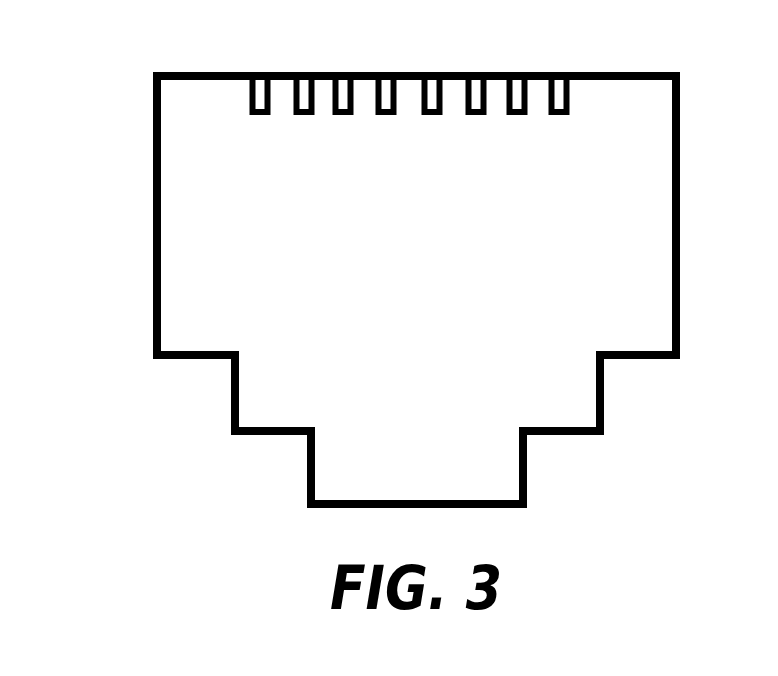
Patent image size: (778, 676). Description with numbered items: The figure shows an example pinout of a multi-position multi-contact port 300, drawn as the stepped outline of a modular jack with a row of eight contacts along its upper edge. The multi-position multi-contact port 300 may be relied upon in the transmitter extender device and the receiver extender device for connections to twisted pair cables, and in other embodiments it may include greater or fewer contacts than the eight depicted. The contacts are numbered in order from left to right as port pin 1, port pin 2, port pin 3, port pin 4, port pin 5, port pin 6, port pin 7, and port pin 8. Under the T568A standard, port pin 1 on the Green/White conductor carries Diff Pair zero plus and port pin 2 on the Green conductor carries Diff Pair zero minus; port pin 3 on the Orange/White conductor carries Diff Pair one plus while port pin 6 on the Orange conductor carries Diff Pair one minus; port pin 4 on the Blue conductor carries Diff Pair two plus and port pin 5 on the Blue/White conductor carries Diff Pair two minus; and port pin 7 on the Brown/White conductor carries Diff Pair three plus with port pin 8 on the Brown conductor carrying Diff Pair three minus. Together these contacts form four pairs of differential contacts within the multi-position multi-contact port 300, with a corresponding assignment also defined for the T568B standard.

The multi-position multi-contact port 300 is at (110, 64).
The port pin 1 is at (259, 114).
The port pin 2 is at (303, 114).
The port pin 3 is at (342, 114).
The port pin 4 is at (385, 114).
The port pin 5 is at (431, 114).
The port pin 6 is at (475, 114).
The port pin 7 is at (516, 114).
The port pin 8 is at (558, 114).